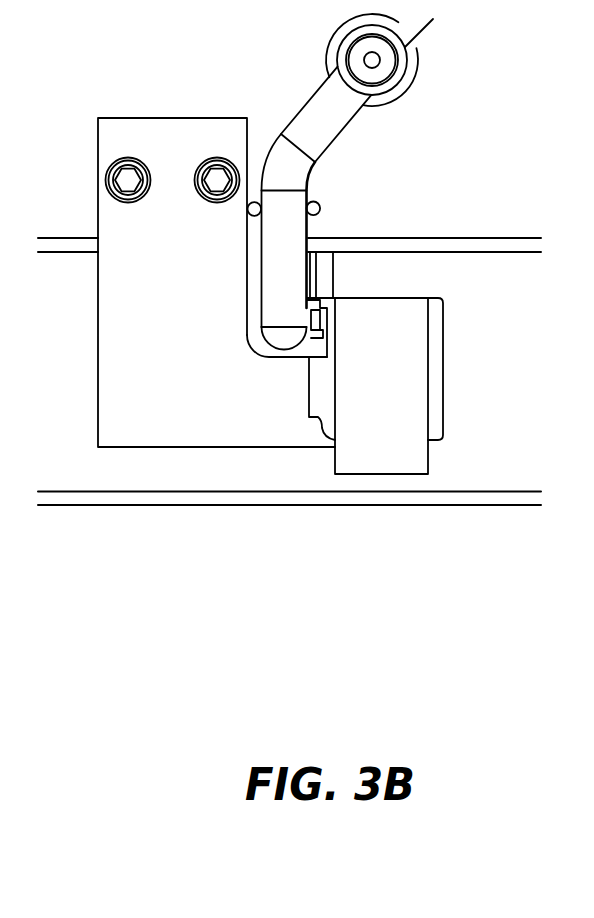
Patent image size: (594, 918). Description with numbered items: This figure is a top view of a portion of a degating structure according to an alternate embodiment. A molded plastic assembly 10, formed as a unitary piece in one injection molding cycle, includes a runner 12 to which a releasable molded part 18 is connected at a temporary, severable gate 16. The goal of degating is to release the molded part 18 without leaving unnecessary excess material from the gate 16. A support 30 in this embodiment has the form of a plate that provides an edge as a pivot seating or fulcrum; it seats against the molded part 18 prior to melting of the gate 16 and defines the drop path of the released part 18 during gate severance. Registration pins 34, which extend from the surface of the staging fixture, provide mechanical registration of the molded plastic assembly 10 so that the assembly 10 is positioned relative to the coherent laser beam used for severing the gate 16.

The molded plastic assembly 10 is at (303, 117).
The runner 12 is at (340, 133).
The gate 16 is at (310, 333).
The molded part 18 is at (393, 387).
The support 30 is at (153, 118).
The registration pin 34 is at (320, 208).